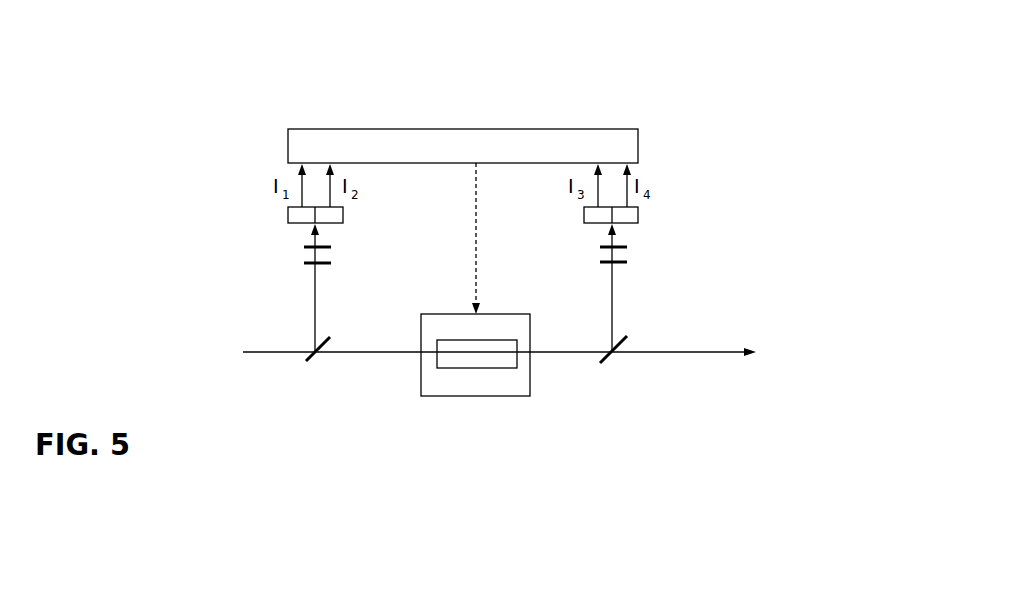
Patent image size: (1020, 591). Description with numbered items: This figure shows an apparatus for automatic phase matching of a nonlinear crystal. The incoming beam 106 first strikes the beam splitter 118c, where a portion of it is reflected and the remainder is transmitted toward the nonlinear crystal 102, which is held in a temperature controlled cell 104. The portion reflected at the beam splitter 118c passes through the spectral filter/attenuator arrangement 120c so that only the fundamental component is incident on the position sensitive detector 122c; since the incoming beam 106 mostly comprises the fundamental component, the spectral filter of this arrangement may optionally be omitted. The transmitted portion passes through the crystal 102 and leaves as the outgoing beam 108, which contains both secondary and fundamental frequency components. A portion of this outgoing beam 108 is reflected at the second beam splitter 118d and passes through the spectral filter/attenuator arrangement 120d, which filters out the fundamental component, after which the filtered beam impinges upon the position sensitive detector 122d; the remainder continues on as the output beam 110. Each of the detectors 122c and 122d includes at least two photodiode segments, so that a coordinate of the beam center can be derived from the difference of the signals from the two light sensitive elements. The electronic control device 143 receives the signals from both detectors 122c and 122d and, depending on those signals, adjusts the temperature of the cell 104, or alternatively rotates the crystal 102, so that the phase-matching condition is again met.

The electronic control device 143 is at (366, 129).
The position sensitive detector 122c is at (343, 215).
The position sensitive detector 122d is at (638, 214).
The spectral filter/attenuator arrangement 120c is at (300, 246).
The spectral filter/attenuator arrangement 120d is at (628, 262).
The incoming beam 106 is at (281, 341).
The beam splitter 118c is at (320, 362).
The temperature controlled cell 104 is at (421, 376).
The nonlinear crystal 102 is at (478, 368).
The outgoing beam 108 is at (581, 362).
The beam splitter 118d is at (614, 358).
The output beam 110 is at (671, 361).